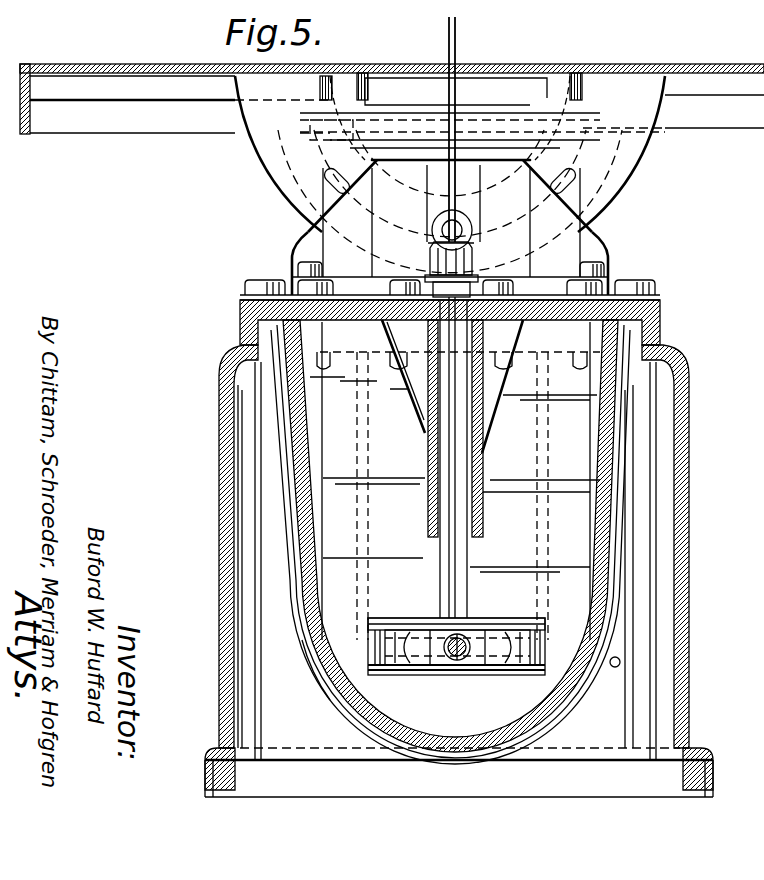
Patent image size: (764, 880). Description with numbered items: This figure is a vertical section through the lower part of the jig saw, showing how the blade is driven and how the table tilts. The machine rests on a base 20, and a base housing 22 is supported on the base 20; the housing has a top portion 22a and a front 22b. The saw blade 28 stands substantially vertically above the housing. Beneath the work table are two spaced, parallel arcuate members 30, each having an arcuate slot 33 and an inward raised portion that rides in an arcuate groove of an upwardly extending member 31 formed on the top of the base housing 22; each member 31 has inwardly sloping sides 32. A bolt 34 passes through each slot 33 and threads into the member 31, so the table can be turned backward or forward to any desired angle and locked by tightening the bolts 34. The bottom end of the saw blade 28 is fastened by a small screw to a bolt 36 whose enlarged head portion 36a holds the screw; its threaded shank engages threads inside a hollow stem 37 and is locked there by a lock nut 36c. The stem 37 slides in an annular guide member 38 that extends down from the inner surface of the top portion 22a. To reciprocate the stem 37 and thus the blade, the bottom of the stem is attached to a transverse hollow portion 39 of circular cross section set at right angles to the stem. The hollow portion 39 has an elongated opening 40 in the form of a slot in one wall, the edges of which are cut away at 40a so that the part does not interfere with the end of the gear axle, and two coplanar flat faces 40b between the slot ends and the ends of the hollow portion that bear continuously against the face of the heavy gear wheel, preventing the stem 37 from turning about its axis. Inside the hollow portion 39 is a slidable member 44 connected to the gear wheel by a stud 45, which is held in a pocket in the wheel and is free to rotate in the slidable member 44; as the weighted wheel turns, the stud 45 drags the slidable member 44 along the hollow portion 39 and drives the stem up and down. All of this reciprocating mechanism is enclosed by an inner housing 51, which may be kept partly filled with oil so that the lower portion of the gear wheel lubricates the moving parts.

The base 20 is at (218, 746).
The base housing 22 is at (689, 457).
The top portion of the base housing 22a is at (609, 288).
The front of the base housing 22b is at (615, 618).
The saw blade 28 is at (456, 43).
The arcuate member 30 is at (615, 147).
The upwardly extending member 31 is at (612, 250).
The inwardly sloping side 32 is at (300, 216).
The arcuate slot 33 is at (579, 180).
The bolt 34 is at (470, 235).
The bolt 36 is at (472, 266).
The enlarged head portion 36a is at (430, 240).
The lock nut 36c is at (428, 268).
The hollow stem 37 is at (470, 552).
The guide member 38 is at (480, 478).
The transverse hollow portion 39 is at (393, 618).
The elongated opening 40 is at (507, 627).
The cut-away slot edges 40a is at (437, 617).
The flat face 40b is at (384, 650).
The slidable member 44 is at (450, 668).
The stud 45 is at (440, 668).
The inner housing 51 is at (330, 680).